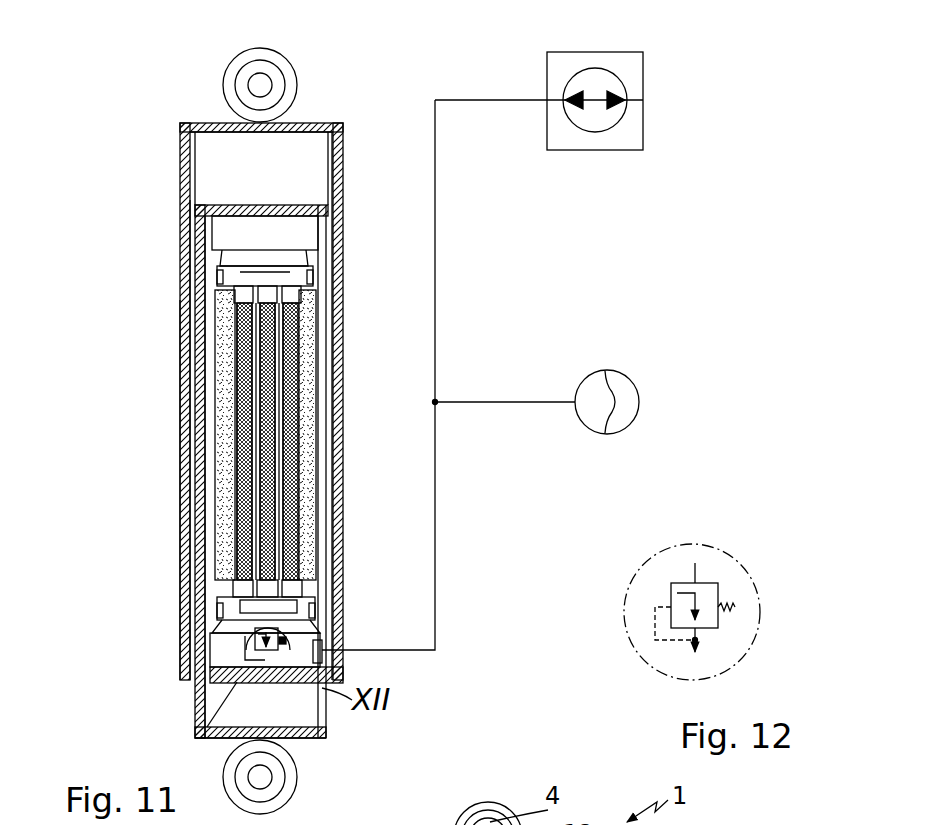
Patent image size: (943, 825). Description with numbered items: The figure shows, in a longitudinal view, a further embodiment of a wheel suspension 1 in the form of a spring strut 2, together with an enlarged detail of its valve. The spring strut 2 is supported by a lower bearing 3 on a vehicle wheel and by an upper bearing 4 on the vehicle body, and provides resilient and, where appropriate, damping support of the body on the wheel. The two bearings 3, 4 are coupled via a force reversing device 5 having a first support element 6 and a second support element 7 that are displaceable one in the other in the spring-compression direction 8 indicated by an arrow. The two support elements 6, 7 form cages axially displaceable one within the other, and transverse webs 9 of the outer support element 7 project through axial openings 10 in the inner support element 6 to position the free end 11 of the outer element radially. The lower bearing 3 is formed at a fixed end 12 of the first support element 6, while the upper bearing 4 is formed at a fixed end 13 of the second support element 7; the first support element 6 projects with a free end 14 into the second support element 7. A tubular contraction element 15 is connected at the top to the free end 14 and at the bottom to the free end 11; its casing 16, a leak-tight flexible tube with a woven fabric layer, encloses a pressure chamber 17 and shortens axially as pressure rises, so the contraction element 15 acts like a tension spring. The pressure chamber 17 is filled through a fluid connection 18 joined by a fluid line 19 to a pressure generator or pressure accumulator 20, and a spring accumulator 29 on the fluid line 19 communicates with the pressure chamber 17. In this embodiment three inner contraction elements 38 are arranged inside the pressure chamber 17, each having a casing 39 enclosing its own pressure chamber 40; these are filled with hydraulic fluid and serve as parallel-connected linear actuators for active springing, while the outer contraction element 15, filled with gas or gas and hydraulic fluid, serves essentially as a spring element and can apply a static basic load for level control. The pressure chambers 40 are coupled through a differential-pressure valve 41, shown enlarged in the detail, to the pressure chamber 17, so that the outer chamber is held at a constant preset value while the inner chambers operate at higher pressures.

In FIG. 11, the wheel suspension 1 is at (135, 70).
In FIG. 11, the spring strut 2 is at (170, 242).
In FIG. 11, the lower bearing 3 is at (262, 778).
In FIG. 11, the upper bearing 4 is at (262, 85).
In FIG. 11, the force reversing device 5 is at (178, 573).
In FIG. 11, the first support element 6 is at (196, 703).
In FIG. 11, the second support element 7 is at (180, 523).
In FIG. 11, the spring-compression direction 8 is at (153, 457).
In FIG. 11, the transverse webs 9 is at (343, 675).
In FIG. 11, the axial openings 10 is at (325, 716).
In FIG. 11, the free end 11 is at (207, 727).
In FIG. 11, the fixed end 12 is at (300, 736).
In FIG. 11, the fixed end 13 is at (313, 125).
In FIG. 11, the free end 14 is at (228, 212).
In FIG. 11, the contraction element 15 is at (308, 330).
In FIG. 11, the casing 16 is at (330, 408).
In FIG. 11, the pressure chamber 17 is at (310, 432).
In FIG. 11, the fluid connection 18 is at (322, 648).
In FIG. 11, the fluid line 19 is at (435, 228).
In FIG. 11, the pressure generator or pressure accumulator 20 is at (633, 143).
In FIG. 11, the spring accumulator 29 is at (632, 378).
In FIG. 11, the inner contraction elements 38 is at (257, 412).
In FIG. 11, the casing 39 is at (262, 488).
In FIG. 11, the pressure chamber 40 is at (265, 526).
In FIG. 11, the differential-pressure valve 41 is at (275, 655).
In FIG. 12, the differential-pressure valve 41 is at (708, 593).